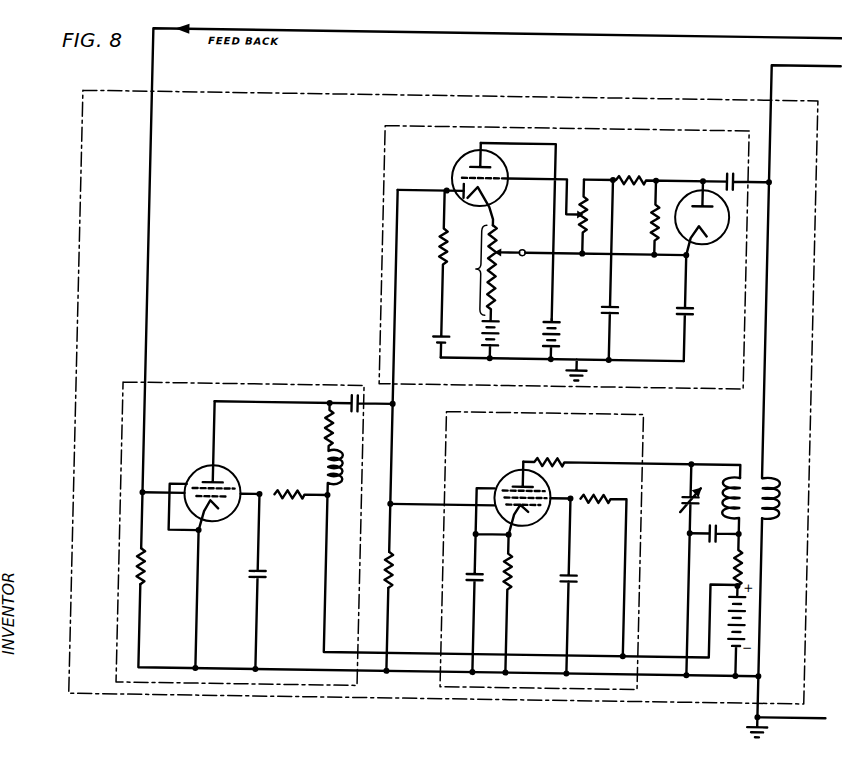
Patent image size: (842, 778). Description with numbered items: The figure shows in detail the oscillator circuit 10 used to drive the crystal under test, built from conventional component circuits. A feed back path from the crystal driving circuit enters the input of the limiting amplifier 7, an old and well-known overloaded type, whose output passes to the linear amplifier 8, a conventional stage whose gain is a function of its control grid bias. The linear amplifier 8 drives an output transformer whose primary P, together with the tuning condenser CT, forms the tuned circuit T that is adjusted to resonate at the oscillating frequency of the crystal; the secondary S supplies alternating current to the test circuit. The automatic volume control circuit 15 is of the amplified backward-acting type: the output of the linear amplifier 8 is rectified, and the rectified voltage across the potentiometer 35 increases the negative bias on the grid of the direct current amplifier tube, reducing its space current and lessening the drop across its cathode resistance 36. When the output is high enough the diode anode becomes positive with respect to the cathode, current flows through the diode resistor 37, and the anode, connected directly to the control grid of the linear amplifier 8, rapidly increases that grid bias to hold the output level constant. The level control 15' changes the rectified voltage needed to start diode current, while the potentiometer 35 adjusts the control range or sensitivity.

The transmitter system 10 is at (553, 90).
The automatic volume control circuit 15 is at (576, 247).
The level control 15' is at (590, 253).
The potentiometer 35 is at (587, 185).
The cathode resistance 36 is at (482, 266).
The diode resistor 37 is at (445, 245).
The limiting amplifier 7 is at (239, 378).
The linear amplifier 8 is at (563, 405).
The tuned circuit T is at (744, 486).
The primary winding P is at (758, 460).
The secondary winding S is at (786, 468).
The tuning condenser CT is at (700, 490).